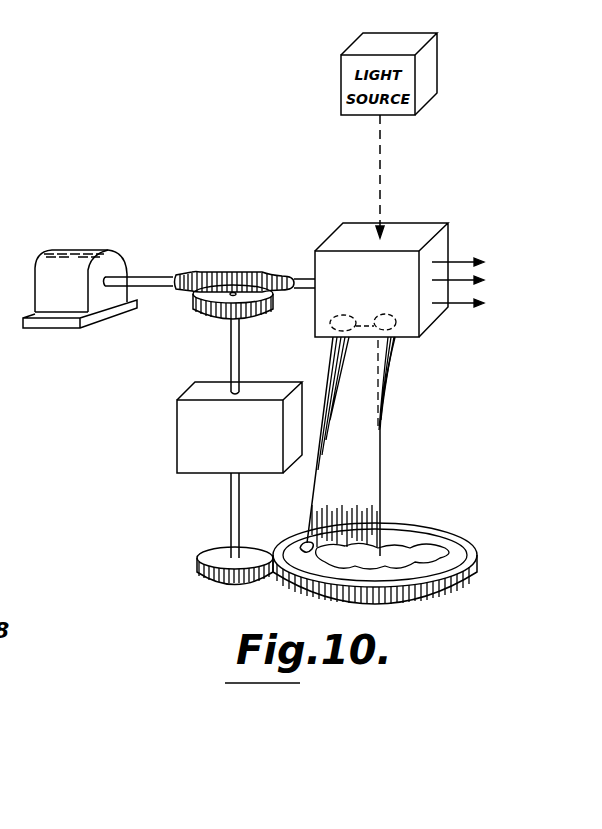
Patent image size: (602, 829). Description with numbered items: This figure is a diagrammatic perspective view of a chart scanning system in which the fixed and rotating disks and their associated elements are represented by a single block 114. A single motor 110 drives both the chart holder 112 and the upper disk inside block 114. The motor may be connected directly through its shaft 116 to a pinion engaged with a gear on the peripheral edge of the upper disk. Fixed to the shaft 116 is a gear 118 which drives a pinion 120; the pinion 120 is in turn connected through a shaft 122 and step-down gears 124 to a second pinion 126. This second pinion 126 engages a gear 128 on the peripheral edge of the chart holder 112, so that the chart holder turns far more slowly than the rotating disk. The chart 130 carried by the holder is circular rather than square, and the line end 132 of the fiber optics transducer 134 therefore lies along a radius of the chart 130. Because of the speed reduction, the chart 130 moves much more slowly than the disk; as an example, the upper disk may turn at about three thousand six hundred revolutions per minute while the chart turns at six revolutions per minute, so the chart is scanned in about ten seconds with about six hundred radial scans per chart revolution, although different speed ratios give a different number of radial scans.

The motor 110 is at (74, 250).
The chart holder 112 is at (385, 562).
The block of fixed and rotating disks 114 is at (427, 231).
The shaft 116 is at (147, 272).
The gear 118 is at (246, 246).
The pinion 120 is at (206, 320).
The shaft 122 is at (230, 356).
The step-down gears 124 is at (177, 434).
The second pinion 126 is at (200, 552).
The gear 128 is at (300, 596).
The chart 130 is at (432, 534).
The line end 132 is at (300, 545).
The fiber optics transducer 134 is at (374, 478).